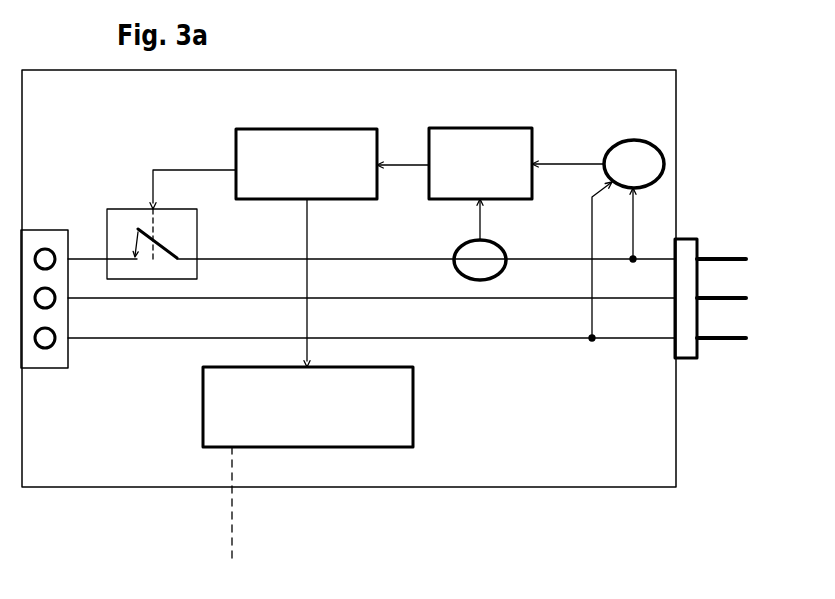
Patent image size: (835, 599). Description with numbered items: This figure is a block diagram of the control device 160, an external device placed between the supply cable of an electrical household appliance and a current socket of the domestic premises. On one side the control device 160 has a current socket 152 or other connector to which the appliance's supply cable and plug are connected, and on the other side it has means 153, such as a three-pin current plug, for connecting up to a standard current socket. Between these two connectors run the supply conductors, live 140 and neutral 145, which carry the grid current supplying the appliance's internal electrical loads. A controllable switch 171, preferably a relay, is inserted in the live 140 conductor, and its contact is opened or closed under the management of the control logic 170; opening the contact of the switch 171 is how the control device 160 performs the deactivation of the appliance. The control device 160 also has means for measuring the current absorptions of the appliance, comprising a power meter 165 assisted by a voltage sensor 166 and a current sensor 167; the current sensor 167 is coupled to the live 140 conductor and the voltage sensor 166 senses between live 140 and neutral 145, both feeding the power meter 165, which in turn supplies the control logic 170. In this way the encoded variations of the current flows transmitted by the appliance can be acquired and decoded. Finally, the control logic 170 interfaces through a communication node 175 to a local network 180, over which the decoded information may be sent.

The control device 160 is at (330, 70).
The control logic 170 is at (313, 129).
The power meter 165 is at (483, 128).
The voltage sensor 166 is at (615, 160).
The current sensor 167 is at (458, 239).
The live 140 is at (528, 257).
The neutral 145 is at (552, 338).
The means for connecting up to a standard current socket 153 is at (690, 348).
The current socket 152 is at (43, 360).
The controllable switch 171 is at (123, 219).
The communication node 175 is at (202, 405).
The local network 180 is at (230, 507).